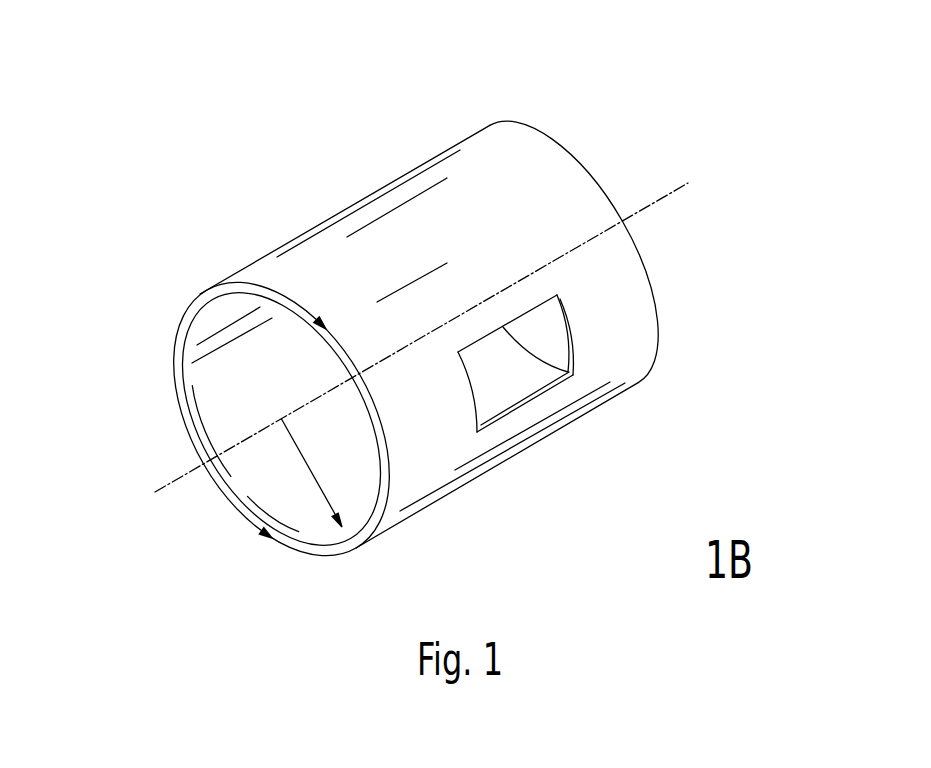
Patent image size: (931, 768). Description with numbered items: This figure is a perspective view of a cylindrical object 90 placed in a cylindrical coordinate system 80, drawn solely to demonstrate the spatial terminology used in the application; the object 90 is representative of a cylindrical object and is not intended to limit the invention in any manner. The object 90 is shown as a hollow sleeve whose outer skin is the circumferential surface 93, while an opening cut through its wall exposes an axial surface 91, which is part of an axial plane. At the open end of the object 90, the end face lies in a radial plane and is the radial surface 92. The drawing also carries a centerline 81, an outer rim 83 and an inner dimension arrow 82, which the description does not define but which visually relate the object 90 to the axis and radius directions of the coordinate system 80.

The cylindrical coordinate system 80 is at (595, 143).
The object 90 is at (460, 130).
The circumferential surface 93 is at (392, 231).
The front end rim 83 is at (184, 316).
The inner diameter 82 is at (321, 483).
The radial surface 92 is at (297, 543).
The longitudinal axis 81 is at (163, 487).
The axial surface 91 is at (546, 382).